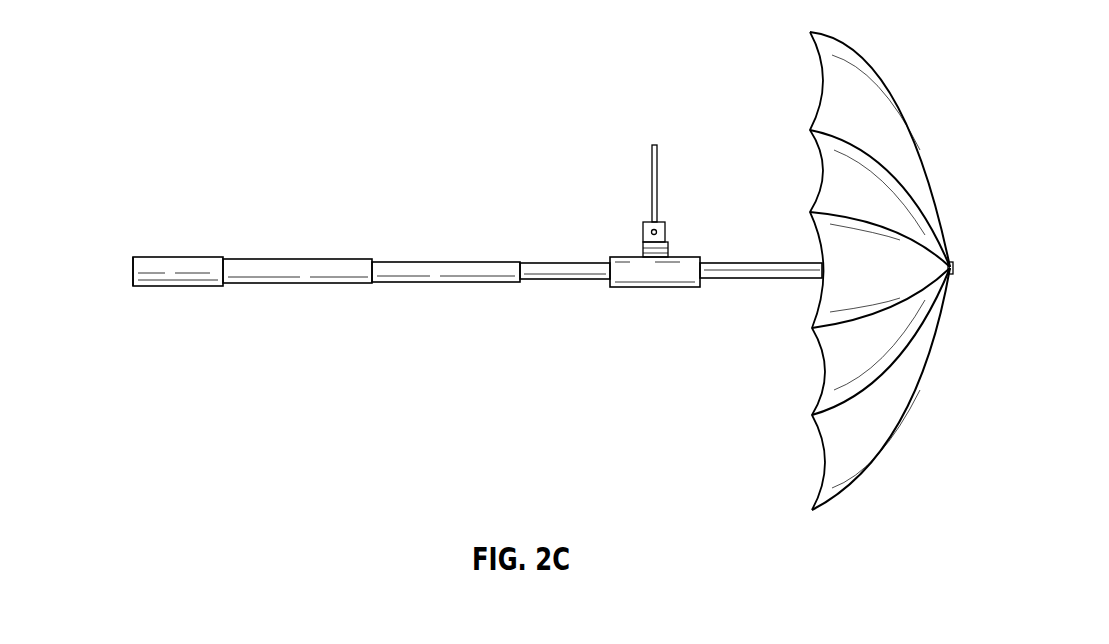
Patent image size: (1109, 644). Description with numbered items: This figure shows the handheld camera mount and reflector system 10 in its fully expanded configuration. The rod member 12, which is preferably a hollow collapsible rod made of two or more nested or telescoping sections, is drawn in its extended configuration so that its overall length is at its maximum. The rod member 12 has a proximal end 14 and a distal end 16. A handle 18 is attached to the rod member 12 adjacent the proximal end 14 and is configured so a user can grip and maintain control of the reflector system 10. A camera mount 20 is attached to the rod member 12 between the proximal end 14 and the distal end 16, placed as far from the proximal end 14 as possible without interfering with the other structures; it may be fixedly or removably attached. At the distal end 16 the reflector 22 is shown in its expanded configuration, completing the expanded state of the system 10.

The camera mount and reflector system 10 is at (298, 338).
The rod member 12 is at (492, 282).
The proximal end 14 is at (132, 272).
The distal end 16 is at (953, 272).
The handle 18 is at (165, 287).
The camera mount 20 is at (657, 160).
The reflector 22 is at (893, 98).